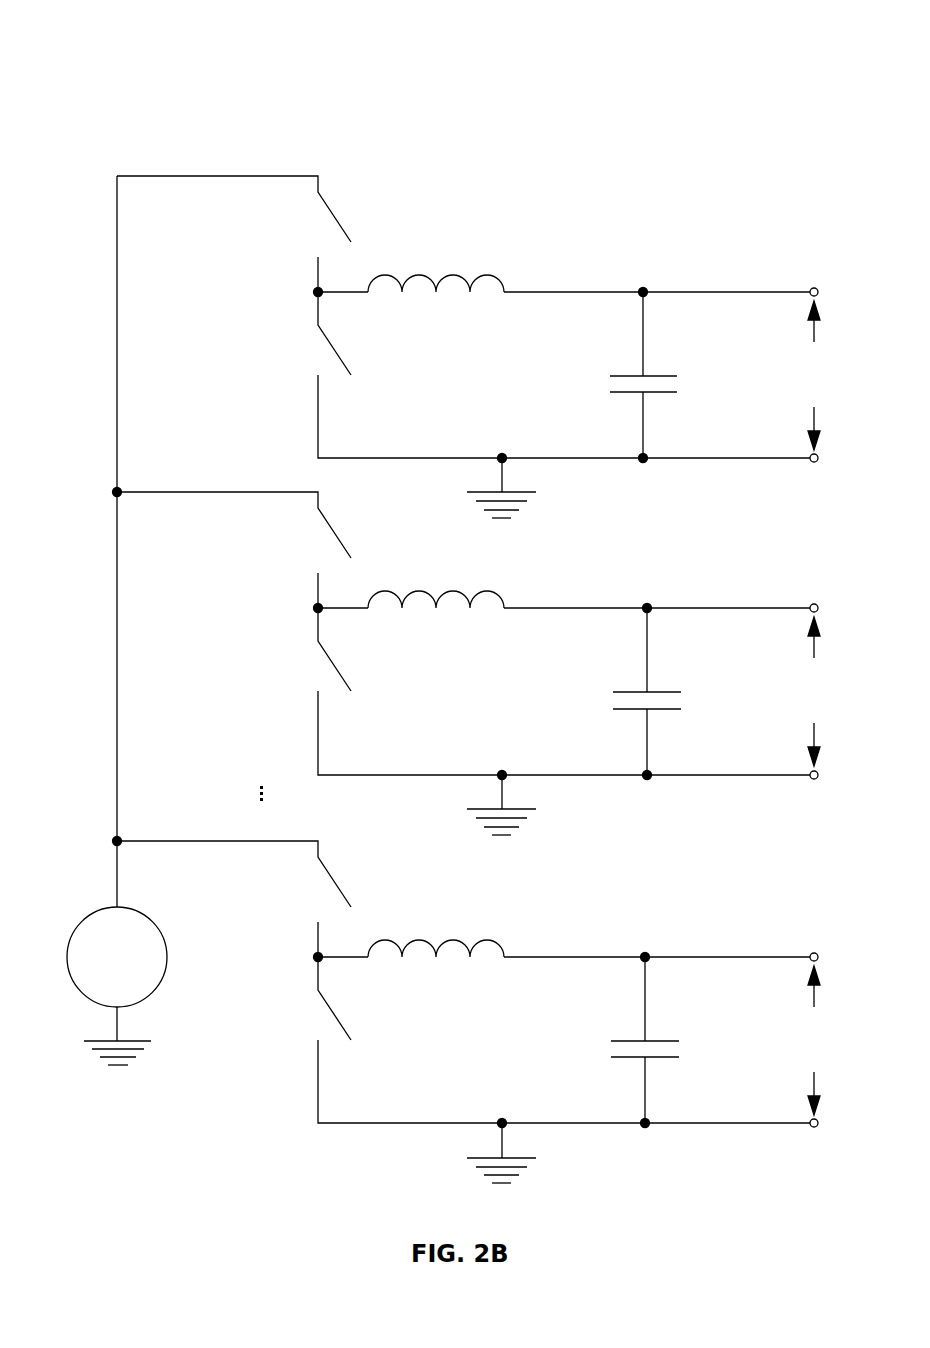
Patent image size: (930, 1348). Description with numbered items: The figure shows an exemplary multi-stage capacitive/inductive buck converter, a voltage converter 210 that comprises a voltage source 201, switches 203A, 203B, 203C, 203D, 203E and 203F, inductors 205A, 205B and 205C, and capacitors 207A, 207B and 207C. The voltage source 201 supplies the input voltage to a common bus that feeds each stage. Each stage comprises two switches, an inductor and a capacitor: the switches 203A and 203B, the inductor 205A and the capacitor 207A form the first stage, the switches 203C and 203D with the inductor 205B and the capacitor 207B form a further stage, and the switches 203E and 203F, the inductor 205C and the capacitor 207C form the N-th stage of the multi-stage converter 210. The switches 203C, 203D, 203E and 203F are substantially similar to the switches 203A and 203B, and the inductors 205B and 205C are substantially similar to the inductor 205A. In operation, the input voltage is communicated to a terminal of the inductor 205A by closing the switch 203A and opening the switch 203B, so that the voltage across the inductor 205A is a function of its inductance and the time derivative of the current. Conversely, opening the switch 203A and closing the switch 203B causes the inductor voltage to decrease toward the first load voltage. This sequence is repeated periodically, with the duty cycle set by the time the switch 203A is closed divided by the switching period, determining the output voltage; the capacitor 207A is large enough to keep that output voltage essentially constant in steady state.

The voltage converter 210 is at (108, 72).
The voltage source 201 is at (149, 917).
The switch 203A is at (330, 212).
The switch 203B is at (342, 361).
The switch 203C is at (346, 542).
The switch 203D is at (340, 677).
The switch 203E is at (345, 891).
The switch 203F is at (336, 1017).
The inductor 205A is at (450, 275).
The inductor 205B is at (450, 590).
The inductor 205C is at (450, 936).
The capacitor 207A is at (612, 375).
The capacitor 207B is at (614, 693).
The capacitor 207C is at (614, 1041).